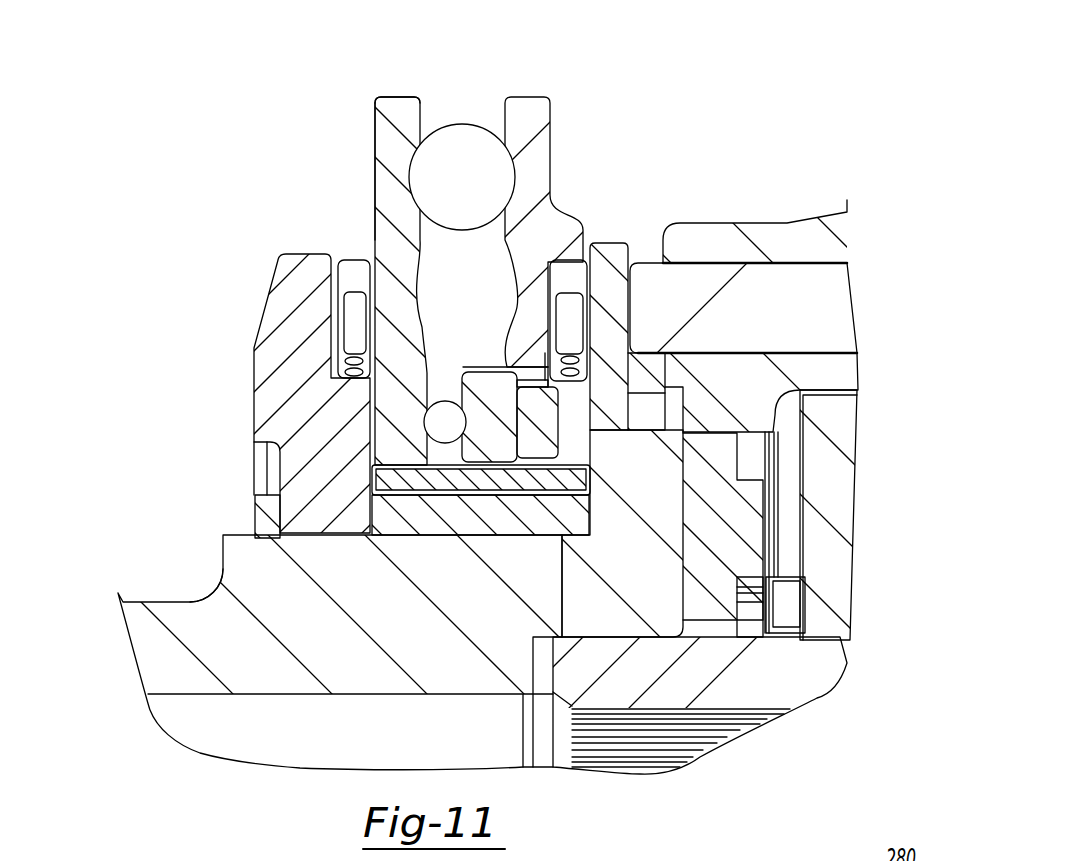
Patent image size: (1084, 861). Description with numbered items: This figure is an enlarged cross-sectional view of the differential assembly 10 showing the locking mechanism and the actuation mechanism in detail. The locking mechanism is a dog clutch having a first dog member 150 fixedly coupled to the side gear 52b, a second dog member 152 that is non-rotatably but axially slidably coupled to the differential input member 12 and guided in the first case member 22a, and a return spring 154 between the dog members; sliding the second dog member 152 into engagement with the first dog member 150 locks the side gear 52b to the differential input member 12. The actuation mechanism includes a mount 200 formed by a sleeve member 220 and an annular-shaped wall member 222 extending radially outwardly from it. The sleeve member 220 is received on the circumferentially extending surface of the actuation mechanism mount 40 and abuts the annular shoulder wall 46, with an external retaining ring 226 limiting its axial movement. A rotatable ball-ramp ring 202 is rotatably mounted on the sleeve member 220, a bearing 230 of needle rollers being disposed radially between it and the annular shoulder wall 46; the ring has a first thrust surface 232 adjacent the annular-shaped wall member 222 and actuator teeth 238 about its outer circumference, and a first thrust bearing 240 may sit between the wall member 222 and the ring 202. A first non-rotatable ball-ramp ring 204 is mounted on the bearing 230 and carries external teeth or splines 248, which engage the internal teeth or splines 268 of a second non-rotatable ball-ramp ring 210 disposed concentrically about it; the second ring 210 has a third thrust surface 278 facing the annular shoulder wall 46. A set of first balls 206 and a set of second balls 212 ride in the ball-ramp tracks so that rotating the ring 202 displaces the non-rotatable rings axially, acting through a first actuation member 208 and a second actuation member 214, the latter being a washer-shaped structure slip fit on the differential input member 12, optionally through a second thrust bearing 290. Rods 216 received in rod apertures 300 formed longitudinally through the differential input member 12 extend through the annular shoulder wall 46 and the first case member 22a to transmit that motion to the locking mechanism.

The differential assembly 10 is at (775, 729).
The differential input member 12 is at (329, 652).
The first case member 22a is at (193, 668).
The actuation mechanism mount 40 is at (300, 570).
The annular shoulder wall 46 is at (653, 457).
The side gear 52b is at (830, 433).
The first dog member 150 is at (782, 535).
The second dog member 152 is at (753, 540).
The return spring 154 is at (752, 582).
The mount 200 is at (313, 422).
The rotatable ball-ramp ring 202 is at (392, 195).
The first non-rotatable ball-ramp ring 204 is at (472, 442).
The first balls 206 is at (443, 412).
The first actuation member 208 is at (535, 450).
The second non-rotatable ball-ramp ring 210 is at (527, 118).
The second balls 212 is at (459, 145).
The second actuation member 214 is at (607, 255).
The rods 216 is at (802, 310).
The sleeve member 220 is at (390, 513).
The annular-shaped wall member 222 is at (335, 393).
The external retaining ring 226 is at (263, 512).
The bearing 230 is at (425, 480).
The first thrust surface 232 is at (375, 126).
The actuator teeth 238 is at (397, 95).
The first thrust bearing 240 is at (350, 330).
The external teeth or splines 248 is at (493, 384).
The internal teeth or splines 268 is at (560, 357).
The third thrust surface 278 is at (552, 310).
The second thrust bearing 290 is at (572, 318).
The rod apertures 300 is at (783, 262).